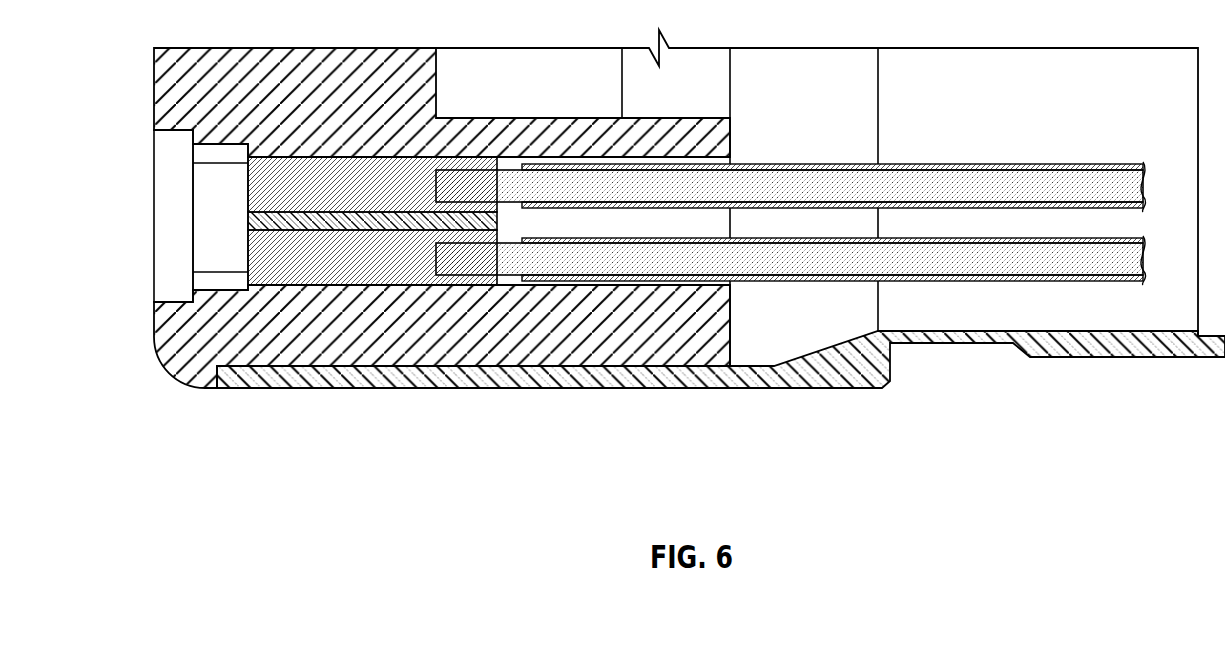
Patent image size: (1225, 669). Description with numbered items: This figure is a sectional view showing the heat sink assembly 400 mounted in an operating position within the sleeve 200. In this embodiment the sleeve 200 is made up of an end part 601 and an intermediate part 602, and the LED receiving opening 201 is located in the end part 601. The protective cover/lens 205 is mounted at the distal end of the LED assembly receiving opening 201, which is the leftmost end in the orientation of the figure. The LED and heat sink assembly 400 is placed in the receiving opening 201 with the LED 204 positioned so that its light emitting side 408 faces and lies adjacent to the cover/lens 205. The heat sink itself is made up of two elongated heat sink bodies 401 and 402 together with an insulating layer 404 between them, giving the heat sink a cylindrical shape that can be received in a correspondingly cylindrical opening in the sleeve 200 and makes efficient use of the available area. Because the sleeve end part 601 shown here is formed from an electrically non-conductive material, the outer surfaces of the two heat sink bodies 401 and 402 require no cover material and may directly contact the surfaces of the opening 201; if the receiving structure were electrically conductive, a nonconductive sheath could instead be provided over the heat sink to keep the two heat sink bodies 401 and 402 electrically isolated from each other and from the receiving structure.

The sleeve 200 is at (562, 412).
The LED receiving opening 201 is at (208, 290).
The LED 204 is at (203, 176).
The protective cover/lens 205 is at (160, 275).
The light emitting side 408 is at (177, 220).
The heat sink assembly 400 is at (467, 298).
The heat sink body 401 is at (365, 187).
The heat sink body 402 is at (268, 272).
The insulating layer 404 is at (300, 228).
The end part 601 is at (175, 335).
The intermediate part 602 is at (633, 370).